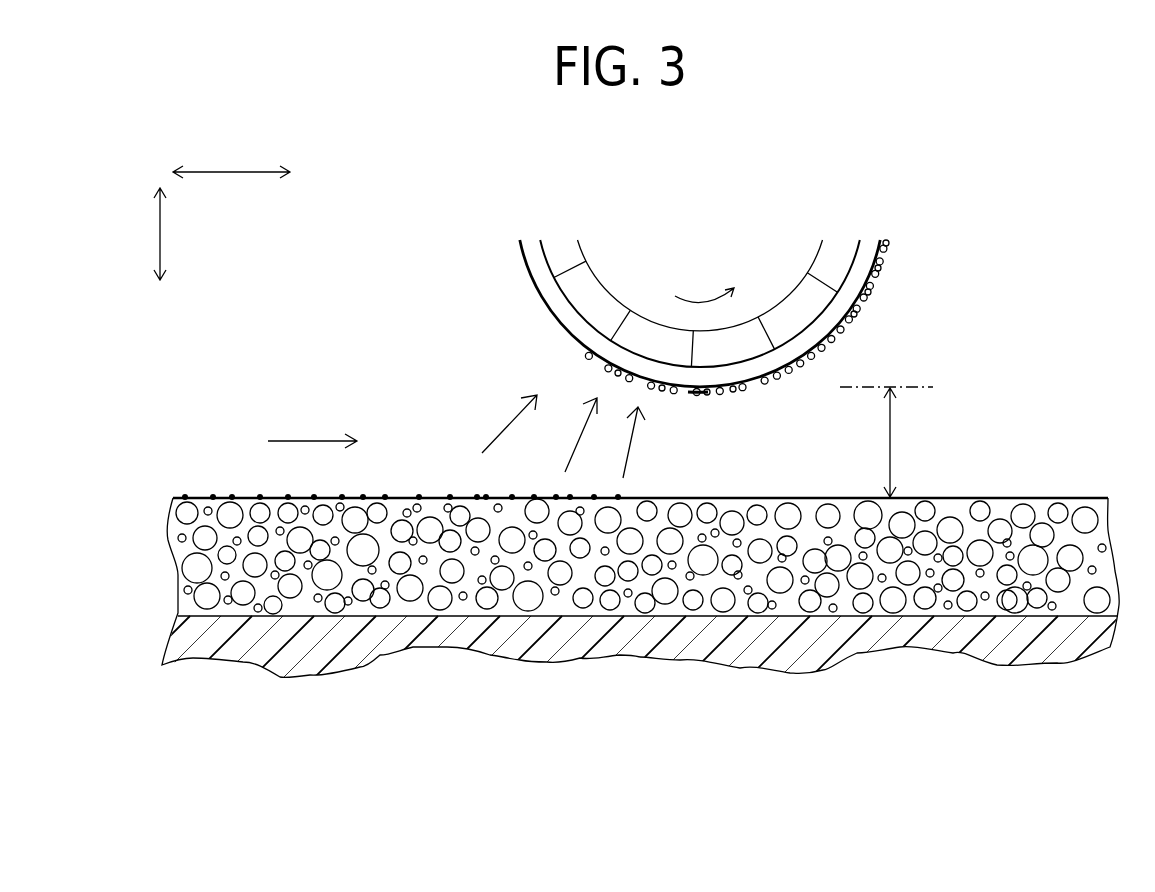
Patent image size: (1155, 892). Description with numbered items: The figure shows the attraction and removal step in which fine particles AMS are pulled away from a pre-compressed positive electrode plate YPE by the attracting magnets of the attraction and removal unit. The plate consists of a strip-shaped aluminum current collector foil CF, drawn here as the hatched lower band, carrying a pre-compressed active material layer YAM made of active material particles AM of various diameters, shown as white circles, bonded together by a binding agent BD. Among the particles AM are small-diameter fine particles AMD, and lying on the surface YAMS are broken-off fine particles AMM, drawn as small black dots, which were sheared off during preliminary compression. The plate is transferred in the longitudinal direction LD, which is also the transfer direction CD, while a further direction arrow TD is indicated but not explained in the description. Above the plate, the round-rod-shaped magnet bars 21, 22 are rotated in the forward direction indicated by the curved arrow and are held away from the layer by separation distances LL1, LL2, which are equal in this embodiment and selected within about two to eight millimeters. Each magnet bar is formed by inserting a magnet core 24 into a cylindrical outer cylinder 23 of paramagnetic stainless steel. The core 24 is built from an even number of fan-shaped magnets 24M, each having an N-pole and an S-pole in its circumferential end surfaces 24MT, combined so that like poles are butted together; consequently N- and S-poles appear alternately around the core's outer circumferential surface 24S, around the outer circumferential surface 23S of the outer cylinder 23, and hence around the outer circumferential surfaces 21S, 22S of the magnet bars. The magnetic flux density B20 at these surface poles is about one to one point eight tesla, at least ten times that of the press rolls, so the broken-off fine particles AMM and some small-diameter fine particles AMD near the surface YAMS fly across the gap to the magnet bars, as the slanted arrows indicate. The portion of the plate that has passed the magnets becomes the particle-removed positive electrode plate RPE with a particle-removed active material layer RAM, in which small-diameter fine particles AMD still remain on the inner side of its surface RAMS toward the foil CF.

The magnet bar 21 is at (585, 318).
The magnet bar 22 is at (398, 258).
The outer cylinder 23 is at (594, 313).
The magnet core 24 is at (631, 318).
The outer circumferential surface of magnet bar 21S is at (594, 313).
The outer circumferential surface of magnet bar 22S is at (594, 313).
The outer circumferential surface of outer cylinder 23S is at (570, 333).
The end surface of fan-shaped magnet 24MT is at (690, 362).
The fan-shaped magnet 24M is at (820, 256).
The outer circumferential surface of magnet core 24S is at (754, 366).
The magnetic flux density B20 is at (696, 392).
The broken-off fine particles AMM is at (873, 318).
The small-diameter fine particles AMD is at (870, 341).
The fine particles AMS is at (642, 499).
The active material particles AM is at (643, 641).
The binding agent BD is at (452, 578).
The current collector foil CF is at (280, 662).
The pre-compressed active material layer YAM is at (365, 610).
The pre-compressed positive electrode plate YPE is at (270, 780).
The particle-removed active material layer RAM is at (985, 601).
The particle-removed positive electrode plate RPE is at (1000, 768).
The surface of pre-compressed active material layer YAMS is at (403, 497).
The surface of particle-removed active material layer RAMS is at (1040, 497).
The separation distance LL1 is at (927, 442).
The separation distance LL2 is at (927, 442).
The longitudinal direction LD is at (231, 192).
The transfer direction CD is at (231, 192).
The thickness direction TD is at (140, 234).